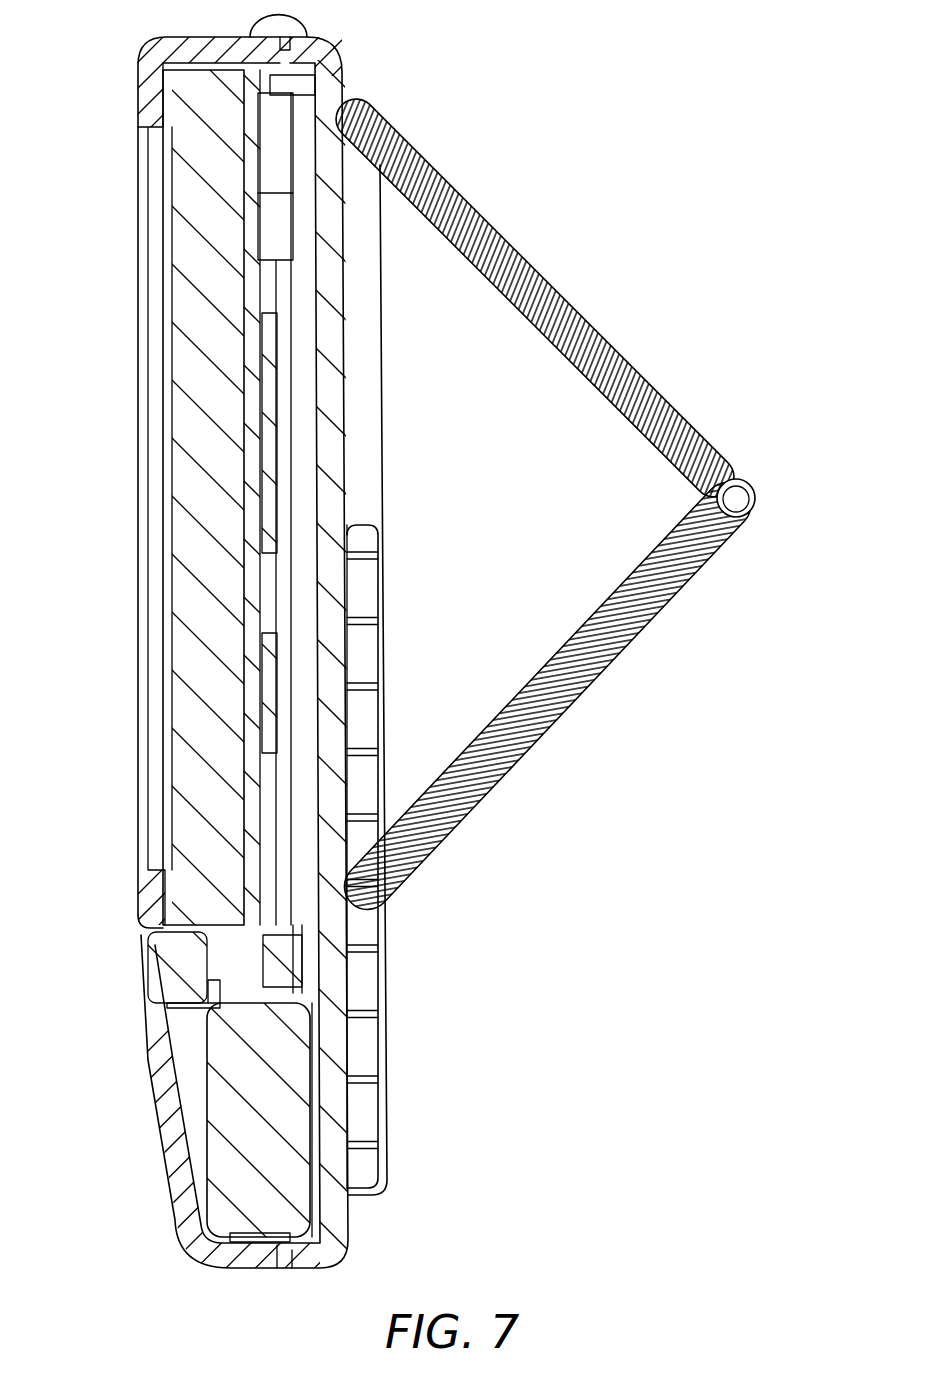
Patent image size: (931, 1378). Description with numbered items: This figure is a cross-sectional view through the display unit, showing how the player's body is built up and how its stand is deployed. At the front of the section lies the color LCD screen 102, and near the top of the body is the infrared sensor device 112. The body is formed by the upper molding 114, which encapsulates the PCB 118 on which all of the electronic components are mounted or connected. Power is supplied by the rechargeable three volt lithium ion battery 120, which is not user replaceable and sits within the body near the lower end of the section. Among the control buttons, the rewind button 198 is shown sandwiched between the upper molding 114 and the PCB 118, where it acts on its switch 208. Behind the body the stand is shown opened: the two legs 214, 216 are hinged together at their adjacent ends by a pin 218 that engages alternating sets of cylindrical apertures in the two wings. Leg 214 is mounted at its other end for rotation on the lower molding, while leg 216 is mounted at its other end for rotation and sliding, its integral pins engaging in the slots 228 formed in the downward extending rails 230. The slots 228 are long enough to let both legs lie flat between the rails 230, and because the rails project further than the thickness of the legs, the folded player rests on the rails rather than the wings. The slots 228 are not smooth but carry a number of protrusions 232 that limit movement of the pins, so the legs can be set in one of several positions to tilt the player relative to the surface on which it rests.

The color LCD screen 102 is at (185, 717).
The infrared sensor device 112 is at (305, 22).
The upper molding 114 is at (146, 80).
The PCB 118 is at (253, 882).
The rechargeable 3 volt lithium ion battery 120 is at (283, 1142).
The rewind button 198 is at (163, 983).
The switch 208 is at (230, 975).
The leg 214 is at (570, 318).
The leg 216 is at (583, 663).
The pin 218 is at (753, 512).
The slots 228 is at (363, 597).
The downward extending rails 230 is at (368, 350).
The protrusions 232 is at (362, 748).